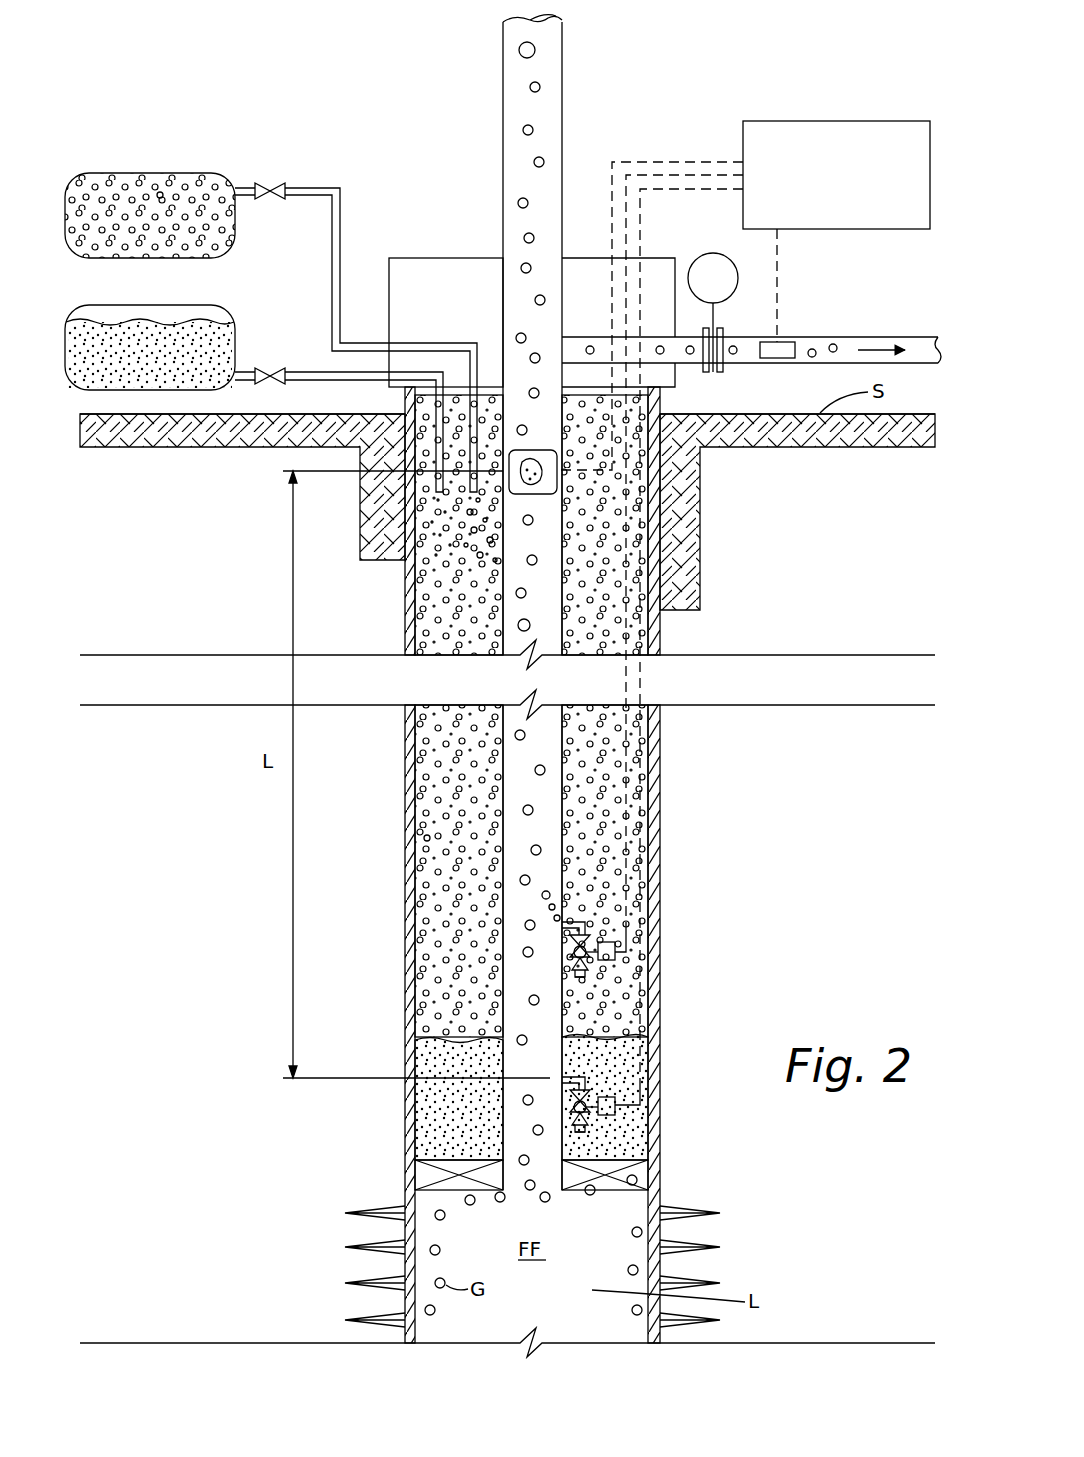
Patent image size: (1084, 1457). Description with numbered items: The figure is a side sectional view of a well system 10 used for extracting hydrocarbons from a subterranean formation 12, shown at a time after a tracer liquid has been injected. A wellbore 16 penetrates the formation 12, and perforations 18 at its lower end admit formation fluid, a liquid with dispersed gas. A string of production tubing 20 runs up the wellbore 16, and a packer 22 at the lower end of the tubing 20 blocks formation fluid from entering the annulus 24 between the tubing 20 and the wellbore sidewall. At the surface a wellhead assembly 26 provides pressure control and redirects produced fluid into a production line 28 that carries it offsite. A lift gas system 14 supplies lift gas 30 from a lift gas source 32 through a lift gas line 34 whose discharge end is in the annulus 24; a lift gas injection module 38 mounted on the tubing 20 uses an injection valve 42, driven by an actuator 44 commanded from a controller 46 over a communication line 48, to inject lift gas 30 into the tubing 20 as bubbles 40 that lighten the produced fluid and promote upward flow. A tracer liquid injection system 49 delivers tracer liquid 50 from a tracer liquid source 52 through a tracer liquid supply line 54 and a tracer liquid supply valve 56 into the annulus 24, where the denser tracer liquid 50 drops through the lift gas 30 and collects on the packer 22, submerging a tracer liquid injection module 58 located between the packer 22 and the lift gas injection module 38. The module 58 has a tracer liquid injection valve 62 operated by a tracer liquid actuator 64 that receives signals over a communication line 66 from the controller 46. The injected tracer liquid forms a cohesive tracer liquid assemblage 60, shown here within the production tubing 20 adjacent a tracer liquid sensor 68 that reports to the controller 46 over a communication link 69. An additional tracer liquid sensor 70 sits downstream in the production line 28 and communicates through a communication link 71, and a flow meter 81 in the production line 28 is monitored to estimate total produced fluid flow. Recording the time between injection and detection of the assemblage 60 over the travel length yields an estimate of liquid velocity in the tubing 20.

The well system 10 is at (852, 28).
The subterranean formation 12 is at (824, 613).
The lift gas system 14 is at (132, 162).
The wellbore 16 is at (413, 818).
The perforations 18 is at (360, 1246).
The production tubing 20 is at (562, 838).
The packer 22 is at (432, 1173).
The annulus 24 is at (438, 733).
The wellhead assembly 26 is at (452, 230).
The production line 28 is at (922, 336).
The lift gas 30 is at (160, 192).
The lift gas source 32 is at (205, 173).
The lift gas line 34 is at (279, 186).
The lift gas injection module 38 is at (623, 968).
The bubbles 40 is at (519, 50).
The injection valve 42 is at (588, 962).
The actuator 44 is at (615, 958).
The controller 46 is at (826, 121).
The communication line 48 is at (627, 928).
The tracer liquid injection system 49 is at (132, 295).
The tracer liquid 50 is at (162, 318).
The tracer liquid source 52 is at (205, 306).
The tracer liquid supply line 54 is at (312, 370).
The tracer liquid supply valve 56 is at (279, 370).
The tracer liquid injection module 58 is at (623, 1125).
The tracer liquid assemblage 60 is at (529, 463).
The tracer liquid injection valve 62 is at (588, 1118).
The tracer liquid actuator 64 is at (615, 1115).
The communication line 66 is at (640, 1025).
The tracer liquid sensor 68 is at (557, 487).
The communication link 69 is at (651, 162).
The tracer liquid sensor 70 is at (780, 359).
The communication link 71 is at (777, 260).
The flow meter 81 is at (719, 373).